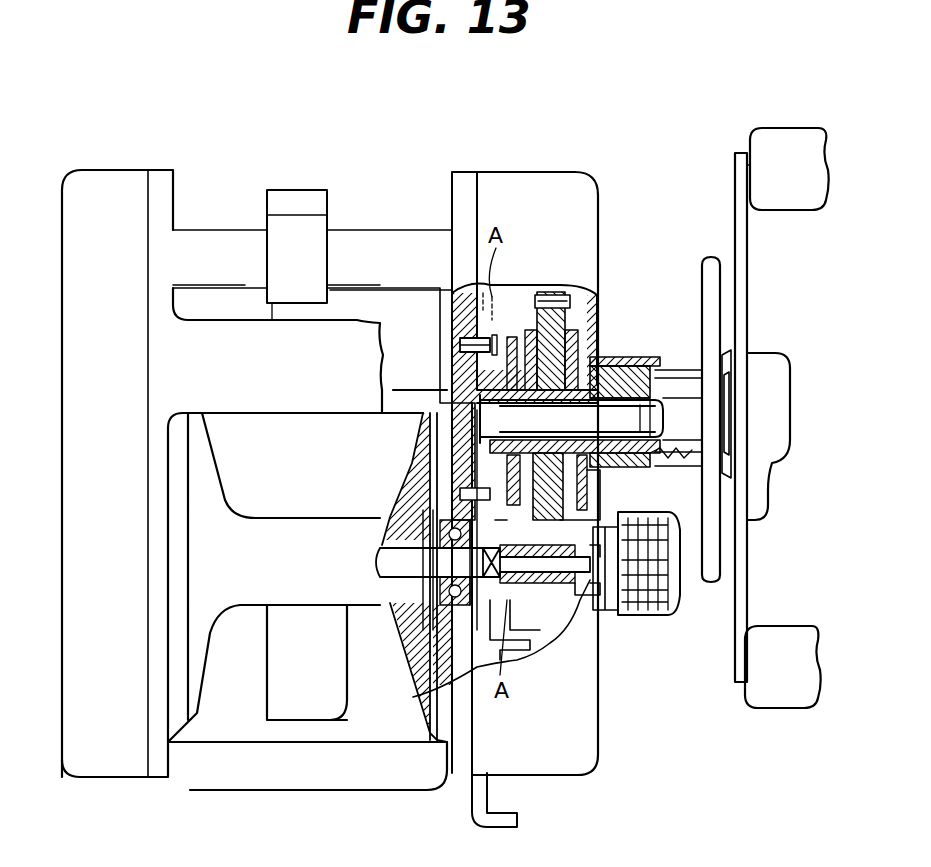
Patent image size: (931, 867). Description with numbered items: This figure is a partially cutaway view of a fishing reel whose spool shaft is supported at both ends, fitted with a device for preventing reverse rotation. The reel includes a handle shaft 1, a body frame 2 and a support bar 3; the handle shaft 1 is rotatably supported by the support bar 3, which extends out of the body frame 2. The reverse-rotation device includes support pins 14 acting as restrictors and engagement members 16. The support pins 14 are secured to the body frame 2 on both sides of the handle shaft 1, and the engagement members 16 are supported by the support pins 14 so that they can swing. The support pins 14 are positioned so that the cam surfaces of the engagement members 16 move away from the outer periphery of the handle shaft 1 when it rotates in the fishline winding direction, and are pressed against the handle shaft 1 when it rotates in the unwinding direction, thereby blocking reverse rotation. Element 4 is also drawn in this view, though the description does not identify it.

The handle shaft 1 is at (605, 345).
The body frame 2 is at (464, 182).
The support bar 3 is at (660, 372).
The housing member 4 is at (540, 497).
The support pin 14 is at (452, 338).
The engagement member 16 is at (487, 345).